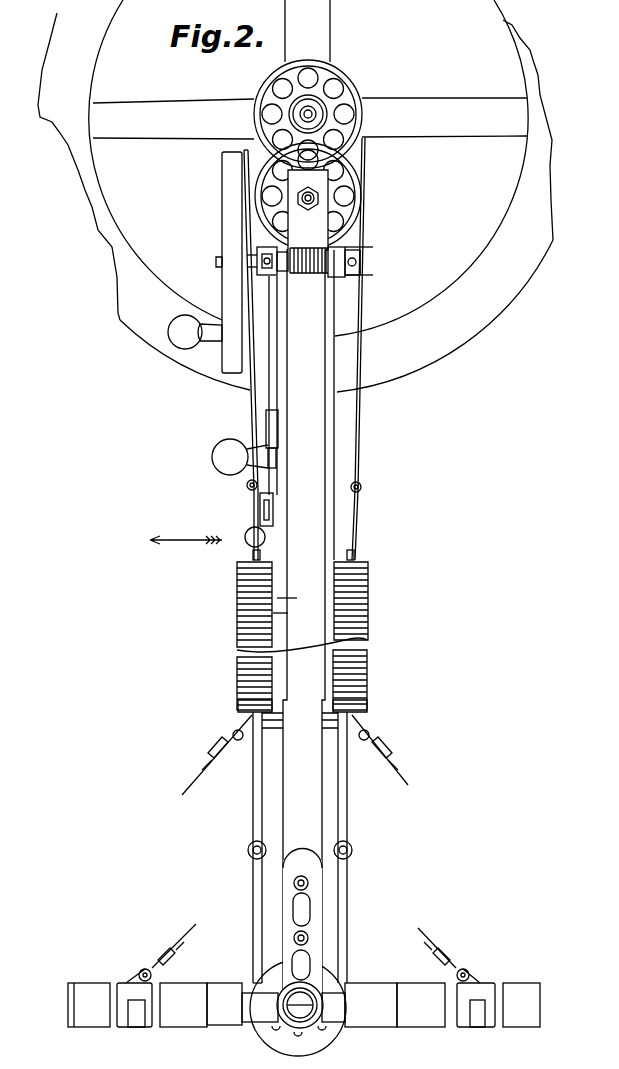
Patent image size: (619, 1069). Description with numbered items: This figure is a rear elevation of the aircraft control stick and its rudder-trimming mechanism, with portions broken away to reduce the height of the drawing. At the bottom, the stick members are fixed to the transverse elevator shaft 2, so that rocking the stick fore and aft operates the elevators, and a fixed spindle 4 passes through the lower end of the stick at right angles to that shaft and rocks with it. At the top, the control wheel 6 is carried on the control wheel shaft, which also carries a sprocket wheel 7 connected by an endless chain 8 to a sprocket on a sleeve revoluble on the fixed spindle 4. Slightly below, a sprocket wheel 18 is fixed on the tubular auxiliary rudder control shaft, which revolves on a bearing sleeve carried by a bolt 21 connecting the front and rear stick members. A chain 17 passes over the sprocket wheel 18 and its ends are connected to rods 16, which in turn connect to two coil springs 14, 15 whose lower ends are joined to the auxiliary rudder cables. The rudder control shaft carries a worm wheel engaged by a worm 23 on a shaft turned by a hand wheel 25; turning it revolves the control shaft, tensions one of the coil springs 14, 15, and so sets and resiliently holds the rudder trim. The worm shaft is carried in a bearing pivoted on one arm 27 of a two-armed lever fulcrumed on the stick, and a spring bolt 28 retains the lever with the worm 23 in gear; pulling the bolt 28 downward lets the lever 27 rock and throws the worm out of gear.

The elevator shaft 2 is at (190, 990).
The fixed spindle 4 is at (320, 996).
The control wheel 6 is at (139, 110).
The sprocket wheel 7 is at (360, 90).
The endless chain 8 is at (360, 152).
The coil spring 14 is at (240, 622).
The coil spring 15 is at (364, 613).
The rods 16 is at (255, 786).
The chain 17 is at (357, 441).
The sprocket wheel 18 is at (360, 202).
The bolt 21 is at (315, 200).
The worm 23 is at (312, 272).
The hand wheel 25 is at (222, 285).
The arm of two-armed lever 27 is at (262, 402).
The spring bolt 28 is at (261, 507).